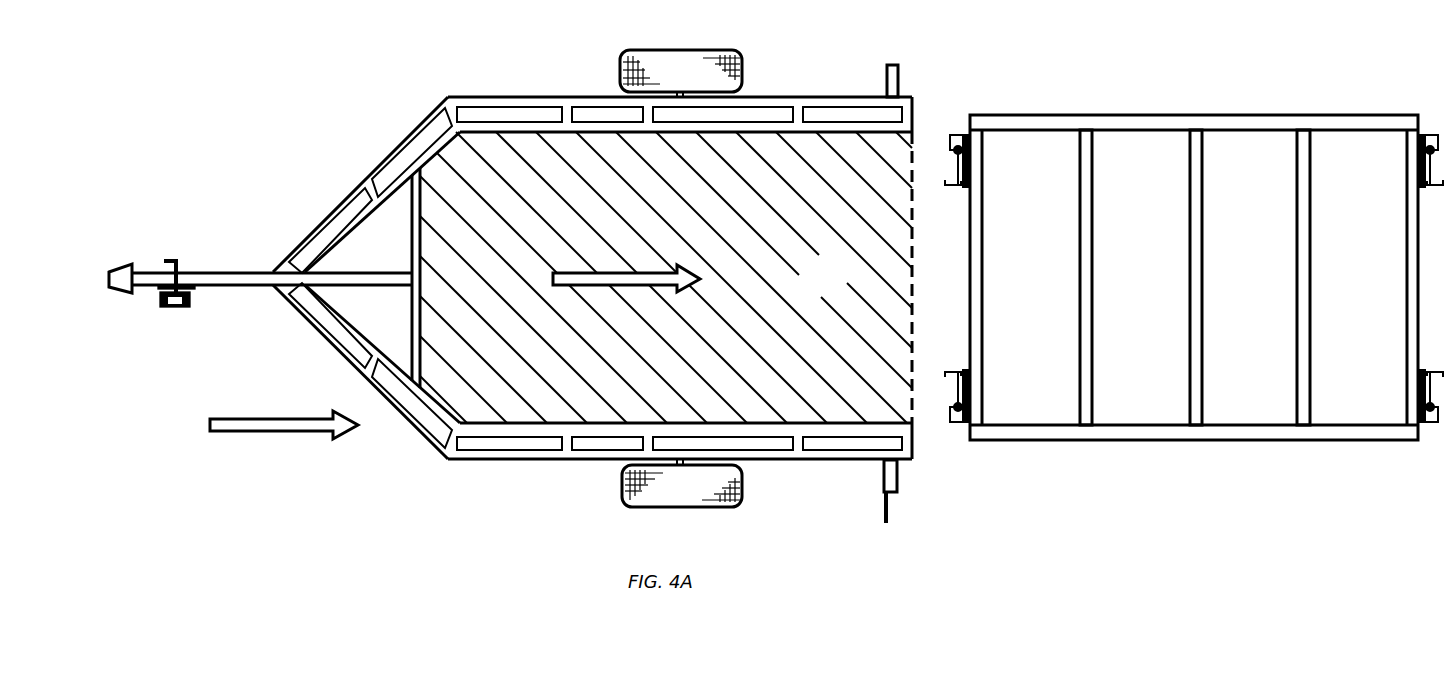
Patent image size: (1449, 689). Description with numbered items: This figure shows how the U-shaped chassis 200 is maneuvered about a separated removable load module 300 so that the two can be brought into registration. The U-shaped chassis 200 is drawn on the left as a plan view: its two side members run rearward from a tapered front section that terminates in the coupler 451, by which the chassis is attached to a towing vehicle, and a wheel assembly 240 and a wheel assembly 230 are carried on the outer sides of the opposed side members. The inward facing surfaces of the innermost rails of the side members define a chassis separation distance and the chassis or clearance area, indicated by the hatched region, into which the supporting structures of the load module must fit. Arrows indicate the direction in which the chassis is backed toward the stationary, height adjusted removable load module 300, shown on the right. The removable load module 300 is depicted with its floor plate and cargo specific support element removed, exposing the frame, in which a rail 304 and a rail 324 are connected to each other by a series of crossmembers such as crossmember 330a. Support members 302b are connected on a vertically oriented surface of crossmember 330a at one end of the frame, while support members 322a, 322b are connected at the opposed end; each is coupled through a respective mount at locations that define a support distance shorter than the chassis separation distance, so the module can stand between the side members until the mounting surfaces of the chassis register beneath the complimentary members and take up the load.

The U-shaped chassis 200 is at (510, 276).
The wheel assembly 240 is at (708, 50).
The wheel assembly 230 is at (648, 507).
The coupler 451 is at (126, 264).
The removable load module 300 is at (1194, 269).
The support member 302b is at (957, 135).
The support member 322a is at (1428, 440).
The support member 322b is at (1430, 135).
The rail 324 is at (1185, 115).
The rail 304 is at (1218, 440).
The crossmember 330a is at (985, 268).